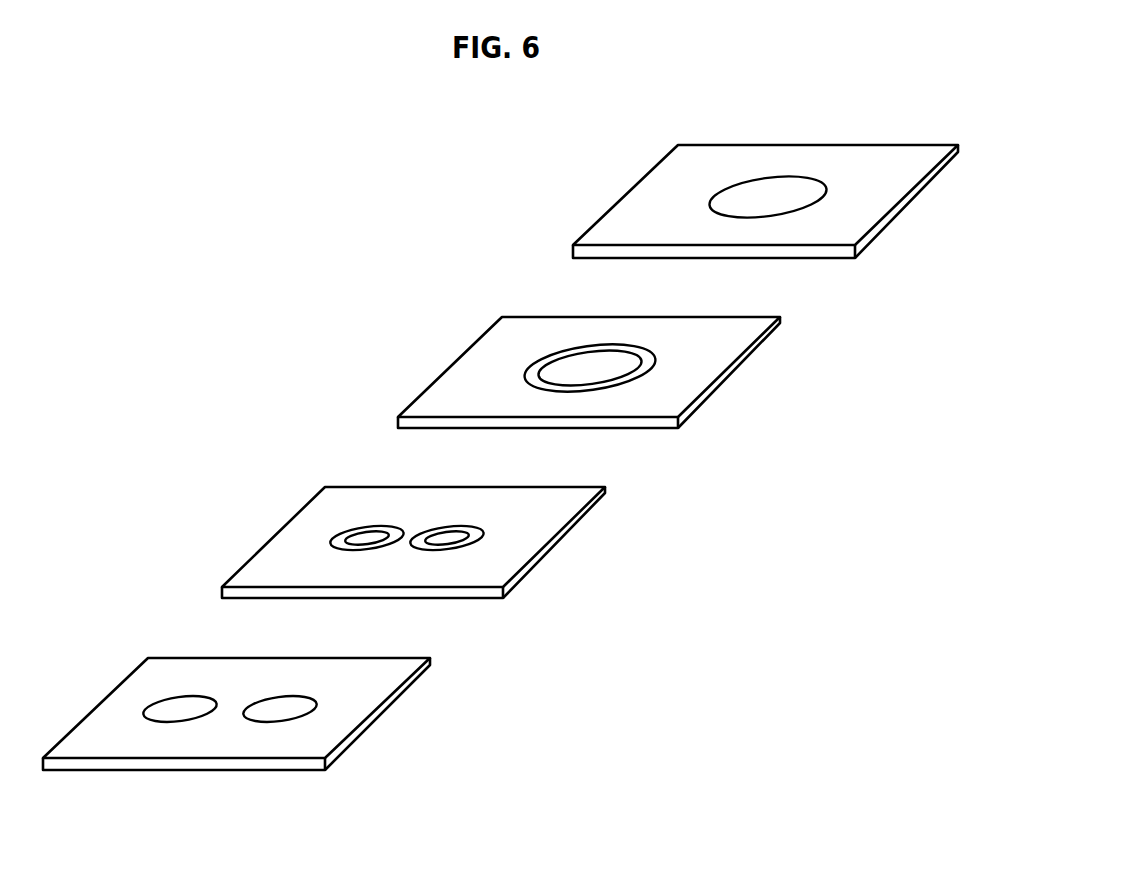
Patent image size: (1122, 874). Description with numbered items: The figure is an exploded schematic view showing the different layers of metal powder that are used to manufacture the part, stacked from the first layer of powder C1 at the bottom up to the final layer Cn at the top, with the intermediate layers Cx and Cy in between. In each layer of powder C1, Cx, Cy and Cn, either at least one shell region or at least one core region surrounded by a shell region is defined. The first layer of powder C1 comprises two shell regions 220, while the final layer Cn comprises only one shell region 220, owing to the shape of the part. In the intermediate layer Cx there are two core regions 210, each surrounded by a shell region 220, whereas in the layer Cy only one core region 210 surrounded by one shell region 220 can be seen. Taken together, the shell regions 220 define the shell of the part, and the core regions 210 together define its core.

The core region 210 is at (590, 367).
The shell region 220 is at (767, 197).
The first layer of powder C1 is at (100, 733).
The intermediate layer of powder Cx is at (277, 562).
The layer of powder Cy is at (483, 368).
The final layer of powder Cn is at (660, 197).